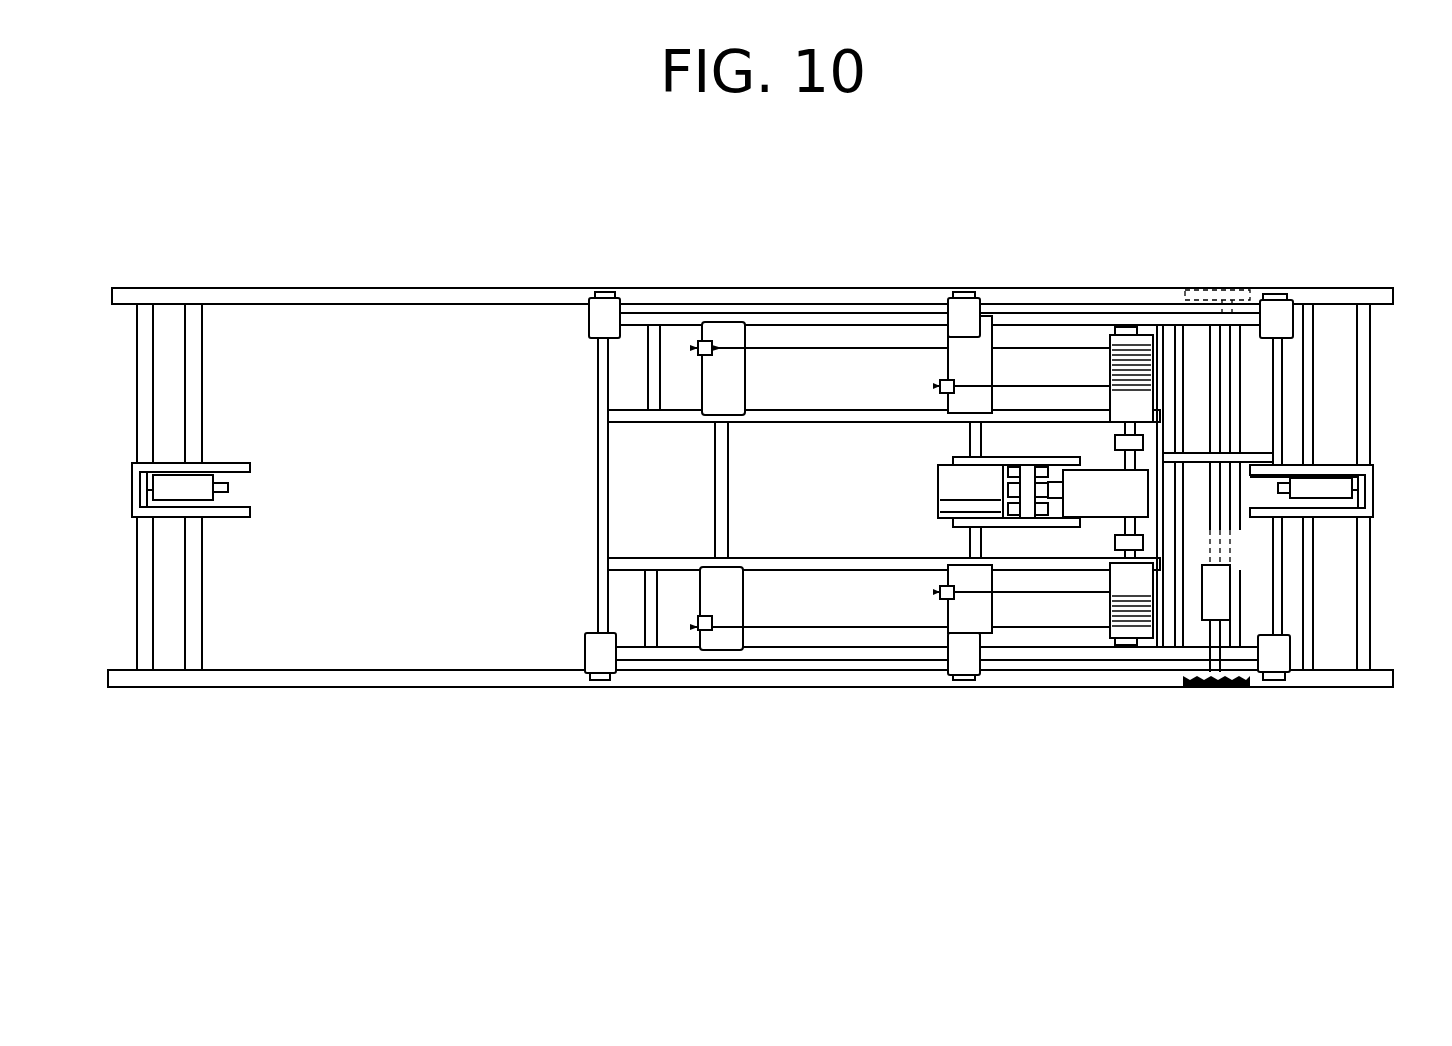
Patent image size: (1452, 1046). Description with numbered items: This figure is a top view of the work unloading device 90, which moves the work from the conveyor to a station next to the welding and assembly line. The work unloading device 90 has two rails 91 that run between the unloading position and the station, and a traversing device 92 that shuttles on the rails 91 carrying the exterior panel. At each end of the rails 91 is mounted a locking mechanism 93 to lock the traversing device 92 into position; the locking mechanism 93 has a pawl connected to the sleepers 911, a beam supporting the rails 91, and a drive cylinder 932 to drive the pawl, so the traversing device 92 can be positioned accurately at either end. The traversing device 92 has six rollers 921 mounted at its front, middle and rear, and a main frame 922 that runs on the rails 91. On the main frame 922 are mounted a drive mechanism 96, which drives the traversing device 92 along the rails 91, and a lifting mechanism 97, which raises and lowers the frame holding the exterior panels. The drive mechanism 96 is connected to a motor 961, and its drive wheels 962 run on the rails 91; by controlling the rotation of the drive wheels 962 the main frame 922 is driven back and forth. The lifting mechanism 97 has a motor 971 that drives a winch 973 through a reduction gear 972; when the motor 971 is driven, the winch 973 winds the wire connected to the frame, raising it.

The work unloading device 90 is at (884, 288).
The rails 91 is at (473, 288).
The sleepers 911 is at (192, 585).
The traversing device 92 is at (598, 509).
The rollers 921 is at (601, 288).
The main frame 922 is at (940, 486).
The locking mechanism 93 is at (198, 476).
The drive cylinder 932 is at (240, 482).
The drive mechanism 96 is at (1232, 598).
The motor 961 is at (1225, 585).
The drive wheels 962 is at (1215, 690).
The lifting mechanism 97 is at (938, 480).
The motor 971 is at (940, 497).
The reduction gear 972 is at (1090, 470).
The winch 973 is at (1120, 345).